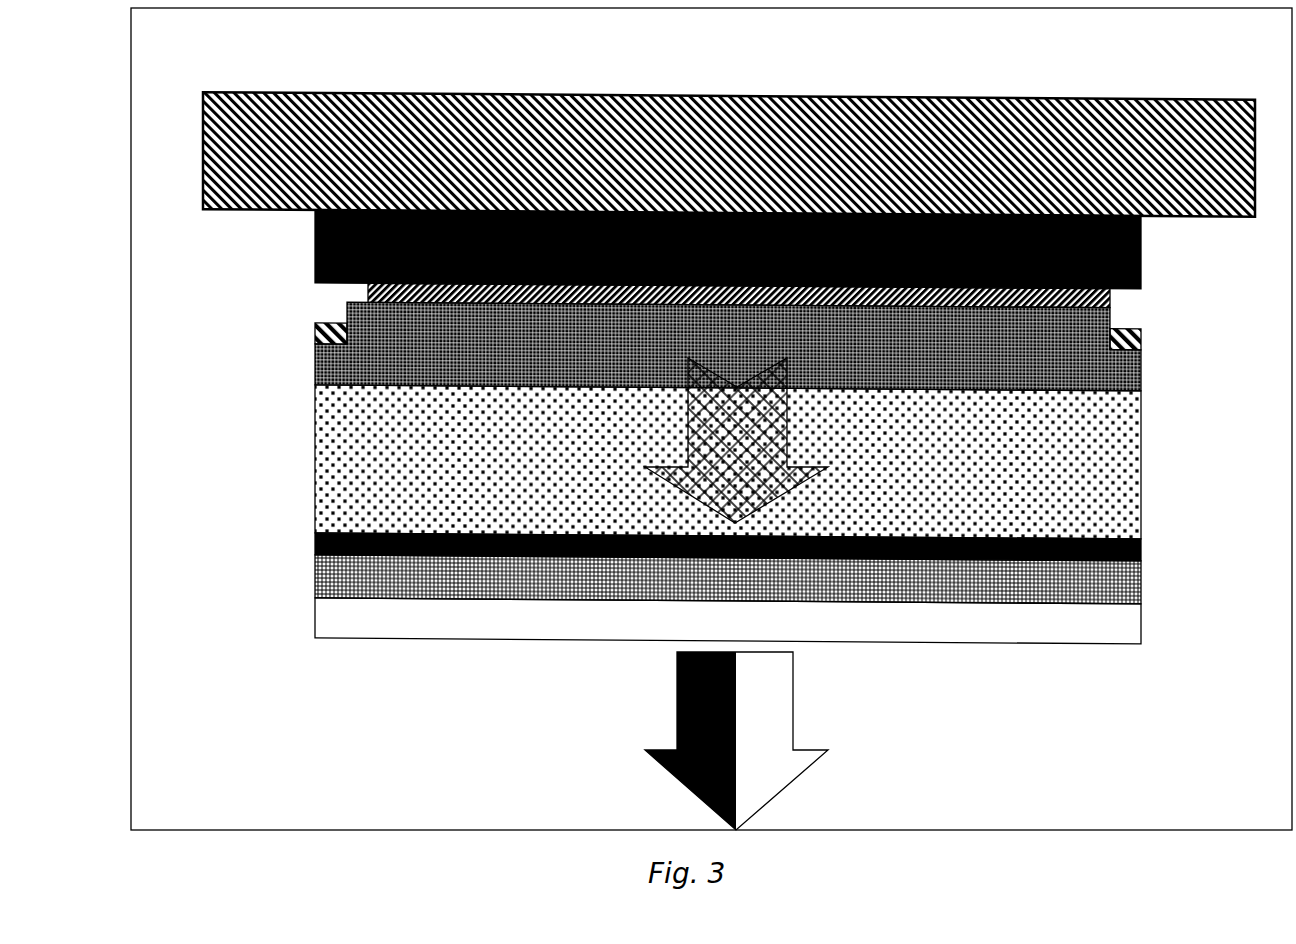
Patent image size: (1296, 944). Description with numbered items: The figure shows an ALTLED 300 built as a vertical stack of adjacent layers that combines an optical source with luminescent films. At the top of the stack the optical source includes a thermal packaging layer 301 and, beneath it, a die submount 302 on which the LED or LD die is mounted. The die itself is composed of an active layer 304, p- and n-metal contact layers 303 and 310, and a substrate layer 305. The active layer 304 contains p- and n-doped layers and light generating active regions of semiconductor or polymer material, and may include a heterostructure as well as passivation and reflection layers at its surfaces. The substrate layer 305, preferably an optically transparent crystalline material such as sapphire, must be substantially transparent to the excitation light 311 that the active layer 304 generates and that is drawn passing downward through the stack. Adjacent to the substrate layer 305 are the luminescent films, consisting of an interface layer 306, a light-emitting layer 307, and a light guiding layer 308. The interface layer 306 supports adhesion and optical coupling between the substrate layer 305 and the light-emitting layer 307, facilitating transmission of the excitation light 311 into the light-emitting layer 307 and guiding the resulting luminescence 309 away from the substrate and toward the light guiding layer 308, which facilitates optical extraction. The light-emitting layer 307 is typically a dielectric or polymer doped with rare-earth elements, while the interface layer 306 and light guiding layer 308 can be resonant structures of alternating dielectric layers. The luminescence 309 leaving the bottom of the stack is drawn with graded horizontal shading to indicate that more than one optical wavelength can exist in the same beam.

The ALTLED 300 is at (332, 722).
The thermal packaging layer 301 is at (245, 218).
The die submount 302 is at (315, 246).
The p-metal contact layer 303 is at (1100, 296).
The active layer 304 is at (347, 364).
The substrate layer 305 is at (1143, 468).
The interface layer 306 is at (314, 542).
The light-emitting layer 307 is at (1143, 580).
The light guiding layer 308 is at (314, 616).
The luminescence 309 is at (643, 748).
The n-metal contact layer 310 is at (1143, 338).
The excitation light 311 is at (835, 469).